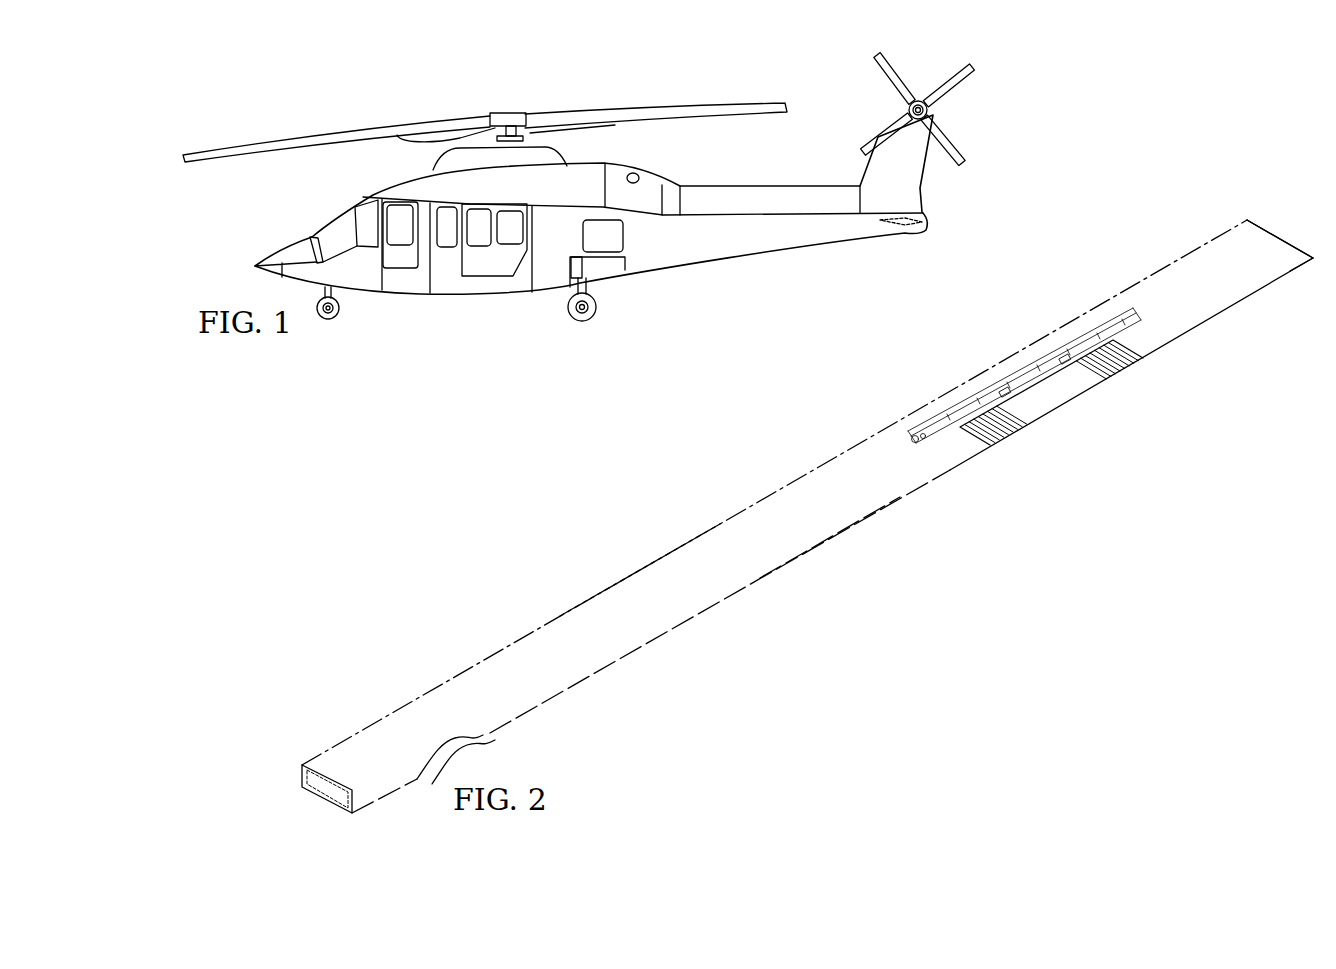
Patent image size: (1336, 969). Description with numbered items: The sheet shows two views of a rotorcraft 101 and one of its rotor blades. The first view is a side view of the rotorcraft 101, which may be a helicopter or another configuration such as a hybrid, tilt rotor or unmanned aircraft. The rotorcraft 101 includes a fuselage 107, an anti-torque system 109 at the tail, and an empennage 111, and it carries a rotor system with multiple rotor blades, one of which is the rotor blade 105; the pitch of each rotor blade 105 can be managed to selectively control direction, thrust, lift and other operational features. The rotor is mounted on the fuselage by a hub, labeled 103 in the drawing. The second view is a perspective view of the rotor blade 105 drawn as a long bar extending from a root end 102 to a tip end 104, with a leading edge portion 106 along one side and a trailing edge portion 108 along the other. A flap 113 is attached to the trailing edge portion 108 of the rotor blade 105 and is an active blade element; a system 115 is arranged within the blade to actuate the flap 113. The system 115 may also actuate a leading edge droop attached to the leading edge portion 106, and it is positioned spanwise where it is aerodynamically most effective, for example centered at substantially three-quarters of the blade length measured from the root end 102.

In FIG. 1, the rotorcraft 101 is at (372, 100).
In FIG. 2, the root end 102 is at (322, 756).
In FIG. 1, the main rotor hub 103 is at (514, 105).
In FIG. 2, the tip end 104 is at (1256, 222).
In FIG. 1, the rotor blade 105 is at (724, 103).
In FIG. 2, the rotor blade 105 is at (1166, 263).
In FIG. 2, the leading edge portion 106 is at (641, 569).
In FIG. 1, the fuselage 107 is at (453, 296).
In FIG. 2, the trailing edge portion 108 is at (821, 552).
In FIG. 1, the anti-torque system 109 is at (945, 109).
In FIG. 1, the empennage 111 is at (738, 253).
In FIG. 2, the flap 113 is at (1062, 400).
In FIG. 2, the system 115 is at (912, 446).